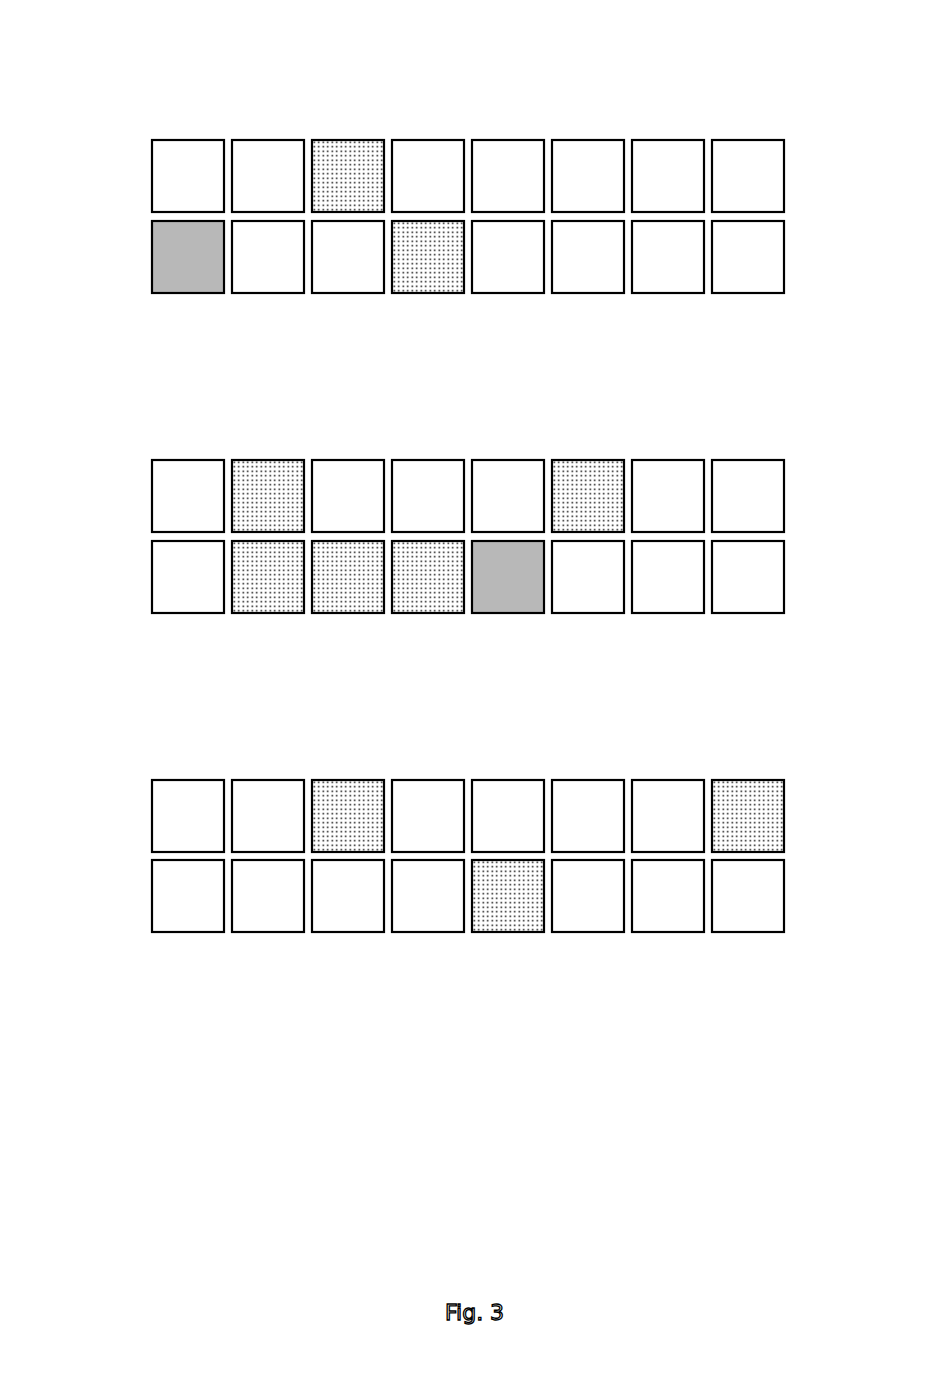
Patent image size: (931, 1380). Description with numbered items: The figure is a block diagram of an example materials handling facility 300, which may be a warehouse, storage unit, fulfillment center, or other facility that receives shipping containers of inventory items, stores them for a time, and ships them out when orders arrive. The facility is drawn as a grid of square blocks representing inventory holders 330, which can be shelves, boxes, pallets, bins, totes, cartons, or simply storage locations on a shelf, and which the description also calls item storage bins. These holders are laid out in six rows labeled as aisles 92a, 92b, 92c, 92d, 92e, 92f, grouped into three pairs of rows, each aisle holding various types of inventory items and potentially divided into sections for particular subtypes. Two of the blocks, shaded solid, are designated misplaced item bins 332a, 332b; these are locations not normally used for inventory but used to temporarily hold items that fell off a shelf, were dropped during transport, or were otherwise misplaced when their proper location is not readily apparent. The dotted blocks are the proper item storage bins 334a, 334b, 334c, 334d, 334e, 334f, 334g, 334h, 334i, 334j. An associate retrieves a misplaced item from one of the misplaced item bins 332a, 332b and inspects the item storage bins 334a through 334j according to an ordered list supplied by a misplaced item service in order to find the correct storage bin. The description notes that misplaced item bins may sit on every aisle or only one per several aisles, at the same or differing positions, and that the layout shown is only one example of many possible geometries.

The materials handling facility 300 is at (207, 50).
The inventory holders 330 is at (758, 140).
The aisle 92a is at (127, 177).
The aisle 92b is at (127, 265).
The aisle 92c is at (127, 495).
The aisle 92d is at (127, 585).
The aisle 92e is at (127, 816).
The aisle 92f is at (127, 905).
The misplaced item bin 332a is at (178, 292).
The misplaced item bin 332b is at (533, 613).
The item storage bin 334a is at (345, 140).
The item storage bin 334b is at (420, 292).
The item storage bin 334c is at (260, 460).
The item storage bin 334d is at (578, 460).
The item storage bin 334e is at (250, 613).
The item storage bin 334f is at (340, 613).
The item storage bin 334g is at (437, 613).
The item storage bin 334h is at (375, 780).
The item storage bin 334i is at (745, 780).
The item storage bin 334j is at (508, 932).